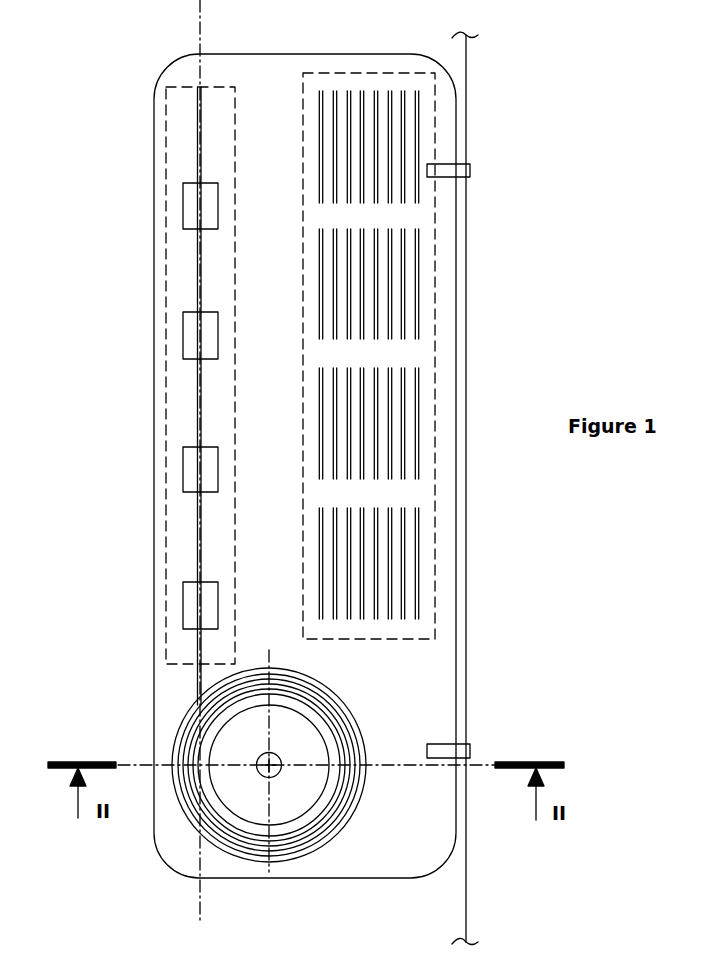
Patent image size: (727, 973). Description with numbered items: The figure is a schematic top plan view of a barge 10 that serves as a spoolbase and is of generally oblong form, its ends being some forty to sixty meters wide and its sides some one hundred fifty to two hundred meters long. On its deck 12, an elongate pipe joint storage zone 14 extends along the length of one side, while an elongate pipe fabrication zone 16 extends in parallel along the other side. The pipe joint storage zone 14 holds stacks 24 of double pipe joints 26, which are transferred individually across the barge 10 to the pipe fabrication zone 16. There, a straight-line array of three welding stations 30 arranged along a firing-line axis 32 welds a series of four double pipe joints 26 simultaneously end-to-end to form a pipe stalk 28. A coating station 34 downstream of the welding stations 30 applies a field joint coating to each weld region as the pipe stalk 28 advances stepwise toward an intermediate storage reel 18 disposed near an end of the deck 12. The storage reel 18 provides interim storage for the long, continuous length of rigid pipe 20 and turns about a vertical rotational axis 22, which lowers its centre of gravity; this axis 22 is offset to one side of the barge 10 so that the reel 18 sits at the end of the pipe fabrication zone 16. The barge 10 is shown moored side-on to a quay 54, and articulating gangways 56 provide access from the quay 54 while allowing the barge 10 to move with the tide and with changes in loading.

The barge 10 is at (118, 178).
The deck 12 is at (172, 395).
The pipe joint storage zone 14 is at (435, 370).
The pipe fabrication zone 16 is at (167, 520).
The intermediate storage reel 18 is at (289, 802).
The rigid pipe 20 is at (185, 740).
The vertical rotational axis 22 is at (283, 757).
The stacks 24 is at (410, 144).
The double pipe joints 26 is at (323, 133).
The pipe stalk 28 is at (200, 285).
The welding stations 30 is at (208, 203).
The firing-line axis 32 is at (197, 43).
The coating station 34 is at (208, 605).
The quay 54 is at (465, 884).
The articulating gangways 56 is at (460, 170).